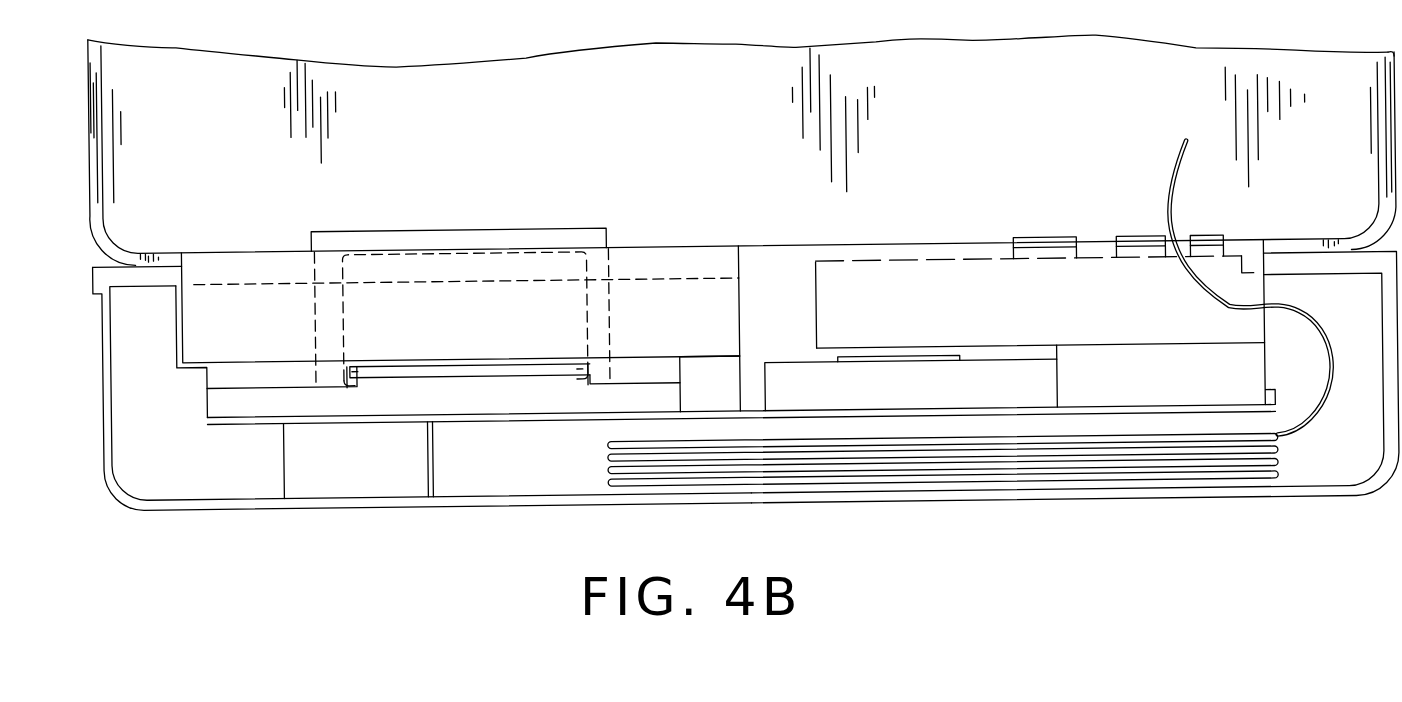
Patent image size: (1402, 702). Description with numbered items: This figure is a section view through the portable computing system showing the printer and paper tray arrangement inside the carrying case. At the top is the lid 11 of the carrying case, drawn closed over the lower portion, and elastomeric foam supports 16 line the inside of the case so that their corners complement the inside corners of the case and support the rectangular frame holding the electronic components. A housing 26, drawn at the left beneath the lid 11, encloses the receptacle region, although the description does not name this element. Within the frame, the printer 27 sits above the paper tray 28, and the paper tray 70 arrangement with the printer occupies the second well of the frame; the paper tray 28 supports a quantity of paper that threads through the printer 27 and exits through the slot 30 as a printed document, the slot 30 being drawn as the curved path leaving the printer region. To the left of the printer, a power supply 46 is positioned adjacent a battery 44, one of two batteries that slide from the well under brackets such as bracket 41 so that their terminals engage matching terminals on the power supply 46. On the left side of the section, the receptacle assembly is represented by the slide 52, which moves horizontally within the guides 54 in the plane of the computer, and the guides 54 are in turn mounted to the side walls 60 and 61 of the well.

The lid 11 is at (770, 132).
The elastomeric foam supports 16 is at (148, 348).
The module housing 26 is at (544, 226).
The printer 27 is at (1038, 325).
The paper tray 28 is at (1357, 472).
The slot 30 is at (1182, 245).
The bracket 41 is at (820, 358).
The battery 44 is at (945, 404).
The power supply 46 is at (1143, 399).
The slide 52 is at (495, 372).
The guides 54 is at (347, 383).
The side wall 60 is at (710, 384).
The side wall 61 is at (205, 392).
The paper tray 70 is at (541, 469).